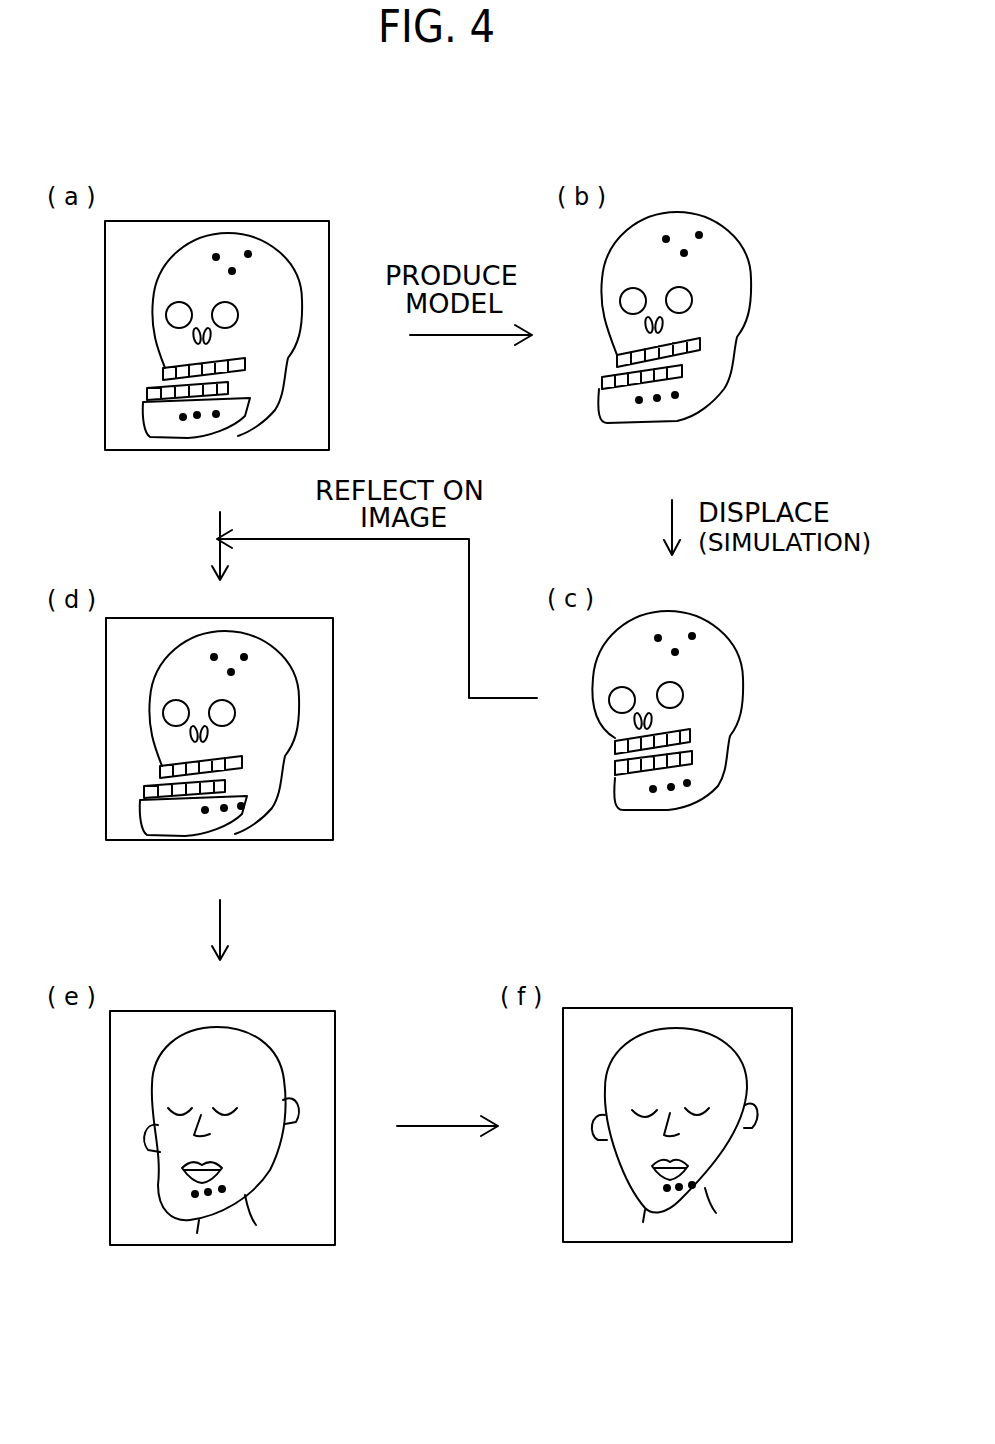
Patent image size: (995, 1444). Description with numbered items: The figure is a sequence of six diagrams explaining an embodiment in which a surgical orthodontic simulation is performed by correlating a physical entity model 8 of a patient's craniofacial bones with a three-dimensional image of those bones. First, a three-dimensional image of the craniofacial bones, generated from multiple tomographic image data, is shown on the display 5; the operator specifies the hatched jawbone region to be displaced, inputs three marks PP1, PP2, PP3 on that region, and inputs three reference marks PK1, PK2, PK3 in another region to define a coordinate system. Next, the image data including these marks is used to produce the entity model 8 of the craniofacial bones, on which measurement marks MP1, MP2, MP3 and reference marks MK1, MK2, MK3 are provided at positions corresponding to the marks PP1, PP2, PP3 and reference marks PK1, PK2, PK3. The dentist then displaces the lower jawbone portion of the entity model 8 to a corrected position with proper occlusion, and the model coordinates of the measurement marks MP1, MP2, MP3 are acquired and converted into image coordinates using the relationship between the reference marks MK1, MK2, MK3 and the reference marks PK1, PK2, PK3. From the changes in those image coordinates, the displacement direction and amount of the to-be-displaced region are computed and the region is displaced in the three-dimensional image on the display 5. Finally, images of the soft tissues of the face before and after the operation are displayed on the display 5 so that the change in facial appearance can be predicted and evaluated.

The display 5 is at (286, 221).
The entity model 8 is at (735, 238).
The reference mark PK1 is at (216, 257).
The reference mark PK2 is at (232, 271).
The reference mark PK3 is at (248, 254).
The mark PP1 is at (183, 417).
The mark PP2 is at (197, 415).
The mark PP3 is at (216, 414).
The reference mark MK1 is at (666, 239).
The reference mark MK2 is at (684, 253).
The reference mark MK3 is at (699, 235).
The measurement mark MP1 is at (639, 400).
The measurement mark MP2 is at (657, 398).
The measurement mark MP3 is at (675, 395).